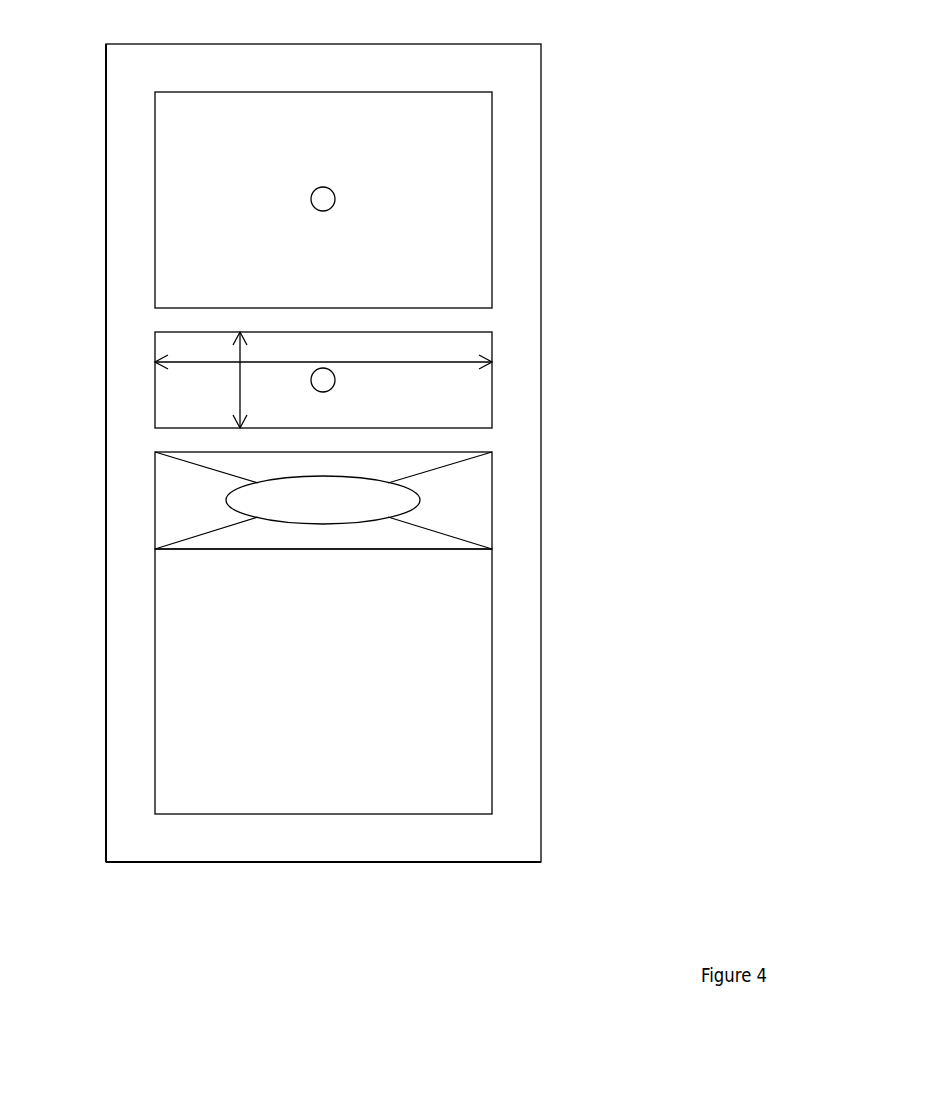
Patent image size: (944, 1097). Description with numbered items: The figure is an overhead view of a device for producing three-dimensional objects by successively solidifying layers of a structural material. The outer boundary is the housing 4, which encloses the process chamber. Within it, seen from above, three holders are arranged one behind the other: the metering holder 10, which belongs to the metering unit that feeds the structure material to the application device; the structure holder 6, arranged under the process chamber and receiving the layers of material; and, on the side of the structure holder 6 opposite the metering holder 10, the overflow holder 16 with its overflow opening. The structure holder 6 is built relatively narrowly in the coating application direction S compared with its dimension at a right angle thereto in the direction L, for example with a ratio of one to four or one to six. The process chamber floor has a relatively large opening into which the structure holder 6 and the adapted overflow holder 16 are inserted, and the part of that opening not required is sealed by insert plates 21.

The housing 4 is at (541, 67).
The metering holder 10 is at (448, 205).
The structure holder 6 is at (440, 395).
The overflow holder 16 is at (455, 505).
The insert plates 21 is at (431, 705).
The direction at a right angle to the coating application direction L is at (443, 362).
The coating application direction S is at (240, 380).